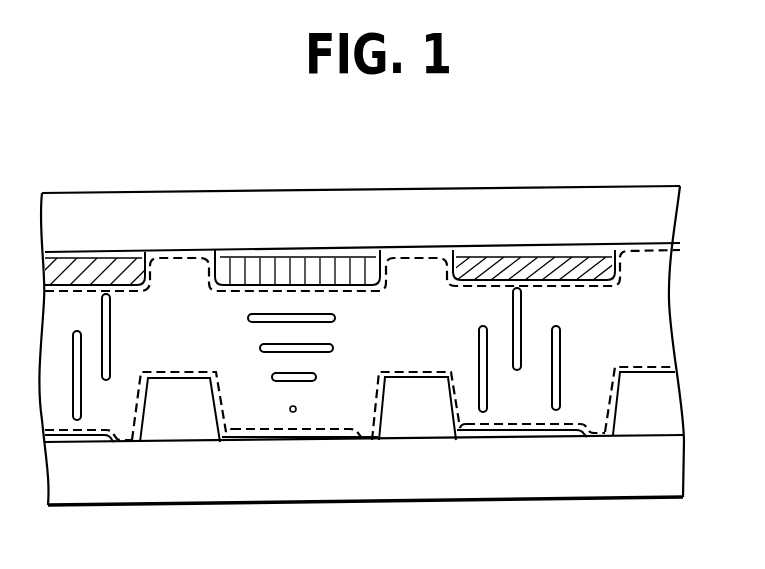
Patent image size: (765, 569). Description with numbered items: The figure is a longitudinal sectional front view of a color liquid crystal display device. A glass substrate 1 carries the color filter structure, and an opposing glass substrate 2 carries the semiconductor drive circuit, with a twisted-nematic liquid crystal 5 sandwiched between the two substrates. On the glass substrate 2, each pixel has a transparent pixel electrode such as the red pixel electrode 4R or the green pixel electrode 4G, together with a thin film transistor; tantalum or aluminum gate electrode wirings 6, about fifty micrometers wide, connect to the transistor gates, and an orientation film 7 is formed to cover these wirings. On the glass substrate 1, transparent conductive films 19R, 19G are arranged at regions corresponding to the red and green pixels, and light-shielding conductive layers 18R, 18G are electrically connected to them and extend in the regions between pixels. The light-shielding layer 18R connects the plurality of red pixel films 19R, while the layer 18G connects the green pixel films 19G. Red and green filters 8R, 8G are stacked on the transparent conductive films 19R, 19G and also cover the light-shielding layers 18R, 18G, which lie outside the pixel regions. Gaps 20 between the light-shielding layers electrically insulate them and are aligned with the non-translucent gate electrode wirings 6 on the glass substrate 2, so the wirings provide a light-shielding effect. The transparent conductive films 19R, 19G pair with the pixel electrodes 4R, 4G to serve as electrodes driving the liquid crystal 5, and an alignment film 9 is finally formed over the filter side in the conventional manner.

The glass substrate 1 is at (660, 212).
The glass substrate 2 is at (667, 458).
The twisted-nematic liquid crystal 5 is at (650, 309).
The orientation film 7 is at (668, 370).
The alignment film 9 is at (668, 246).
The gaps 20 is at (410, 256).
The red filter 8R is at (276, 257).
The green filter 8G is at (557, 257).
The transparent conductive film 19R is at (230, 252).
The light-shielding conductive layer 18R is at (353, 258).
The transparent conductive film 19G is at (480, 248).
The light-shielding conductive layer 18G is at (603, 248).
The red pixel electrode 4R is at (293, 440).
The green pixel electrode 4G is at (540, 440).
The gate electrode wirings 6 is at (413, 420).